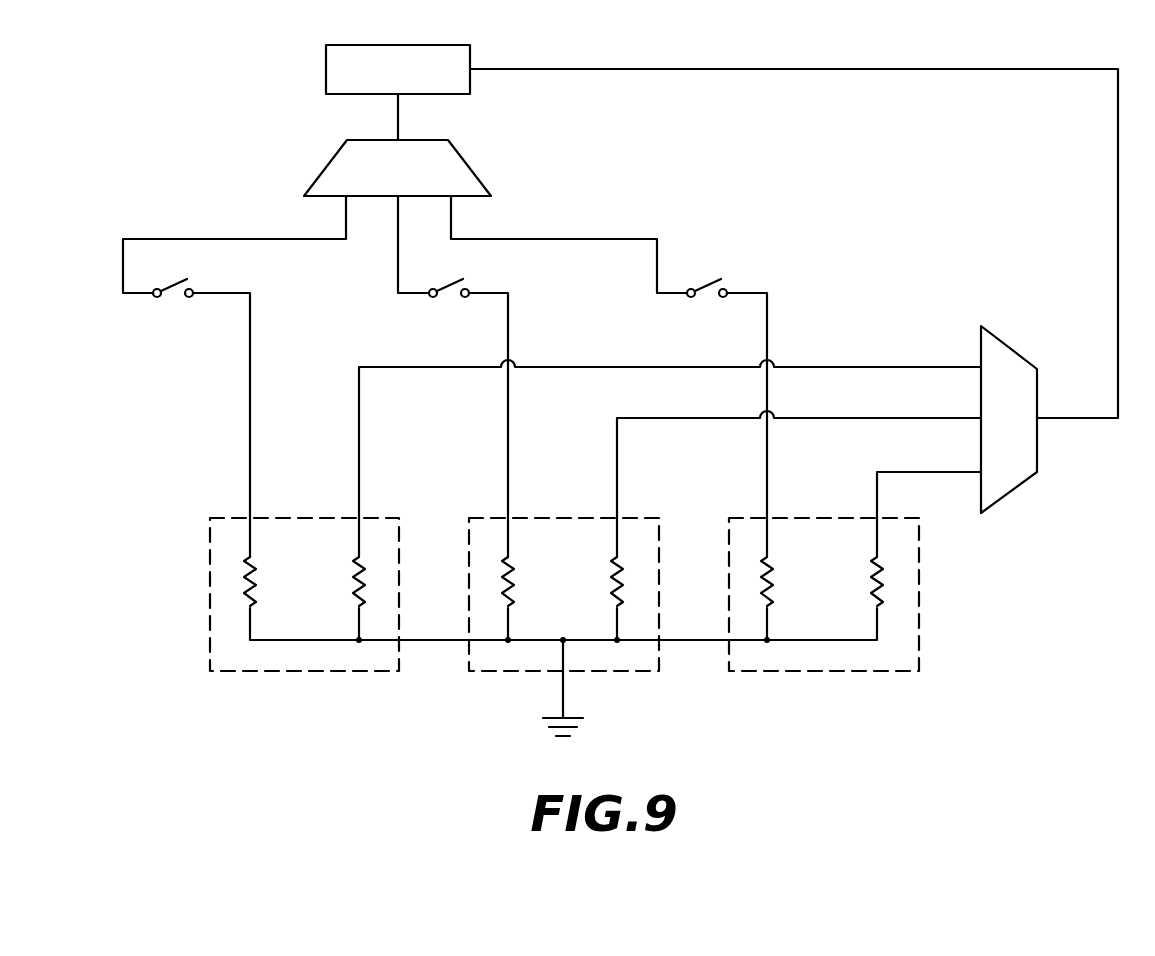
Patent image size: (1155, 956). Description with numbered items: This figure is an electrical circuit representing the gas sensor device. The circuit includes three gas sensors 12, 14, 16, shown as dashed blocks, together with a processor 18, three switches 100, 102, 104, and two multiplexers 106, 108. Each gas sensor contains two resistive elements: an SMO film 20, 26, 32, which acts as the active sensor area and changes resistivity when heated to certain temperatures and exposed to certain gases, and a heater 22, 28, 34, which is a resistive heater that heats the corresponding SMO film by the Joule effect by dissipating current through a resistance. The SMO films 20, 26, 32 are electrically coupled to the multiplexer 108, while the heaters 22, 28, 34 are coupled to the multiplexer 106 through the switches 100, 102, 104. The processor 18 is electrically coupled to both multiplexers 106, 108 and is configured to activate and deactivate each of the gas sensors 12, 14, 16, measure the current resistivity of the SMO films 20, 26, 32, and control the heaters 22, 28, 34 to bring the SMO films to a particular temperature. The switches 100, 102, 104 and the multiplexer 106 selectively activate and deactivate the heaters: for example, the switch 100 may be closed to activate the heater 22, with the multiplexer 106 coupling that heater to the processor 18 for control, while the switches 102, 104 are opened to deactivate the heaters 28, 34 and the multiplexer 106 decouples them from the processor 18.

The processor 18 is at (326, 63).
The multiplexer 106 is at (326, 167).
The multiplexer 108 is at (1010, 348).
The switch 100 is at (176, 297).
The switch 102 is at (451, 297).
The switch 104 is at (709, 297).
The gas sensor 12 is at (316, 516).
The gas sensor 14 is at (576, 516).
The gas sensor 16 is at (836, 516).
The SMO film 20 is at (353, 597).
The heater 22 is at (258, 568).
The SMO film 26 is at (612, 597).
The heater 28 is at (516, 568).
The SMO film 32 is at (871, 597).
The heater 34 is at (774, 568).